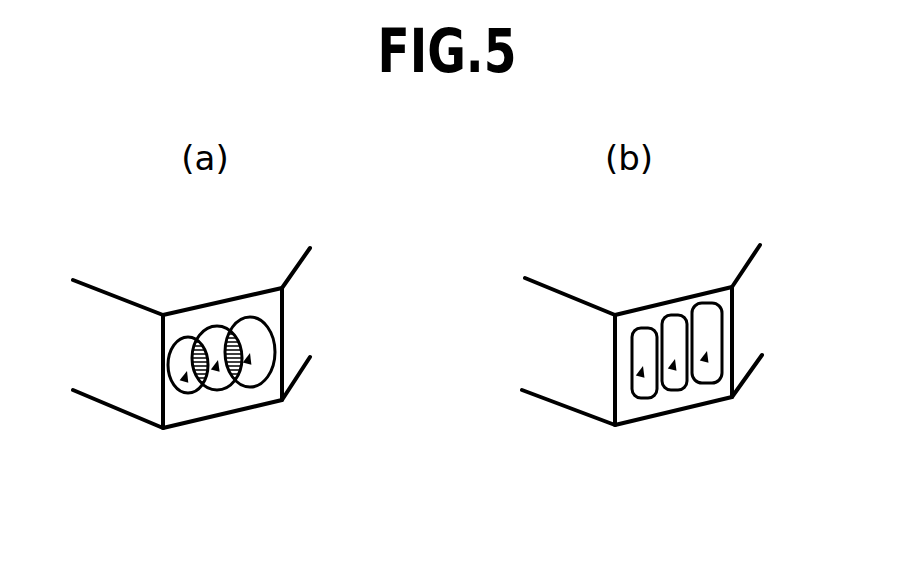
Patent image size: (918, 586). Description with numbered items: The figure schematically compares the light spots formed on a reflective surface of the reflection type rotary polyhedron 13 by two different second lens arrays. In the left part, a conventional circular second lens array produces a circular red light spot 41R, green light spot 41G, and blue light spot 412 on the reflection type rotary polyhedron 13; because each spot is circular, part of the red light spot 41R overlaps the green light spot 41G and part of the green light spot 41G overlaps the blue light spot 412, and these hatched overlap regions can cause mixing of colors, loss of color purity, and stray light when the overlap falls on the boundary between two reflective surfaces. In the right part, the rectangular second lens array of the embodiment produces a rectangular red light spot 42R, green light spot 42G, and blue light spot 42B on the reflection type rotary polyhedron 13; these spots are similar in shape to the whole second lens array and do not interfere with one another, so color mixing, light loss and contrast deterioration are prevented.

The reflection type rotary polyhedron 13 is at (137, 320).
The red light spot 41R is at (184, 381).
The green light spot 41G is at (215, 370).
The blue light source 412 is at (247, 363).
The red light spot 42R is at (640, 376).
The green light spot 42G is at (672, 369).
The blue light spot 42B is at (704, 361).